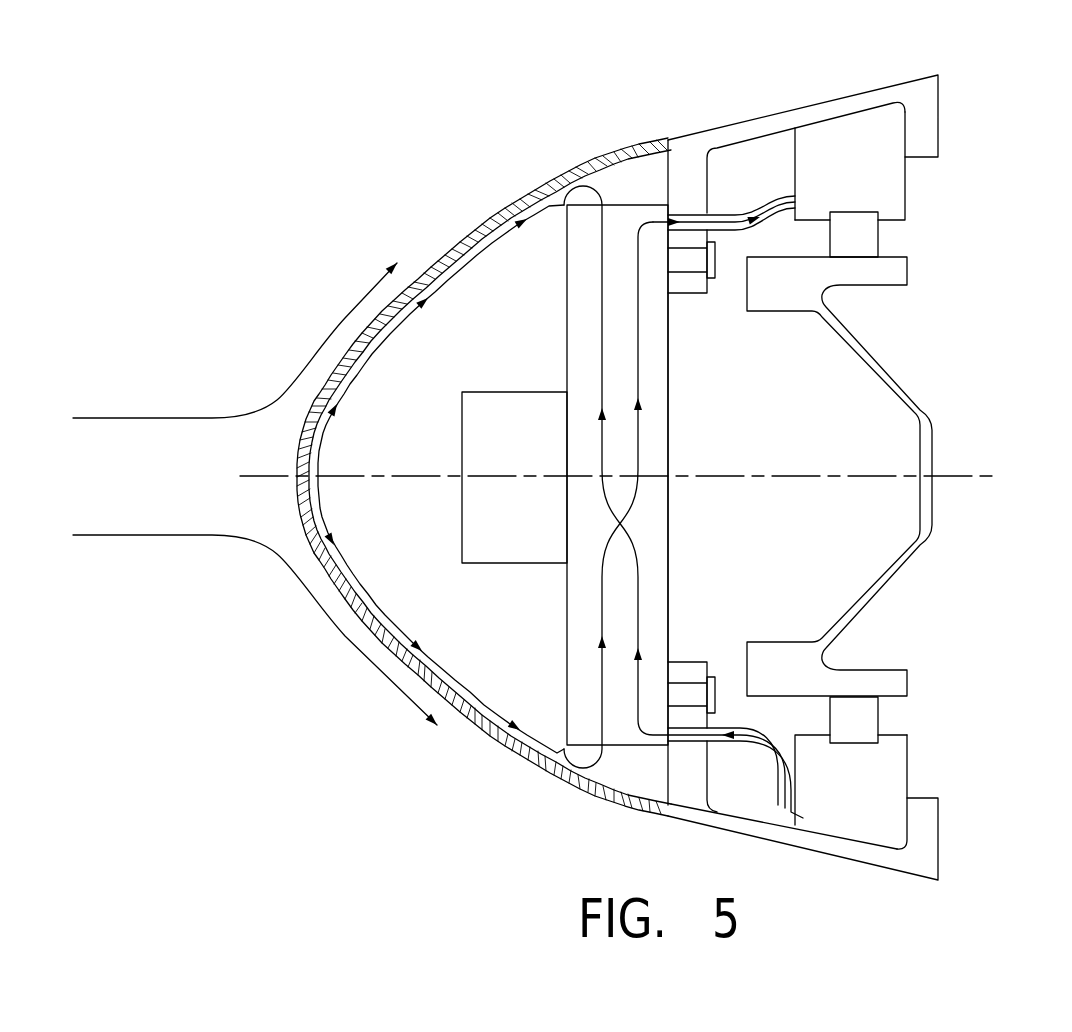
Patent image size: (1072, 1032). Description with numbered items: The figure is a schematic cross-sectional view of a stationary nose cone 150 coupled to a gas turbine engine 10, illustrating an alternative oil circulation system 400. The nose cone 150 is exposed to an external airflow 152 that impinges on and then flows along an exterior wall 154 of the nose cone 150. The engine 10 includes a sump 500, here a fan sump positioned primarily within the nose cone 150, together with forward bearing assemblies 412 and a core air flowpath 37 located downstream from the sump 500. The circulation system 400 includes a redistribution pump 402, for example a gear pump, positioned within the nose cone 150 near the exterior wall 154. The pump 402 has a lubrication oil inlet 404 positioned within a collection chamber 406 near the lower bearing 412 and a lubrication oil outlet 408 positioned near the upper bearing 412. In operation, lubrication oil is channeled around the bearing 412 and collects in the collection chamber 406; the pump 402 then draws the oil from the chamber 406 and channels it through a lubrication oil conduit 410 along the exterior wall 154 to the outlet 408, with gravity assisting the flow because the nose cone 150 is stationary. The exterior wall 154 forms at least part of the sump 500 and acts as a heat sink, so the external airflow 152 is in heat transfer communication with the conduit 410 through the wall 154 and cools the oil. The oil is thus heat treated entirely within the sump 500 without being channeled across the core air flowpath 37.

The gas turbine engine 10 is at (893, 72).
The core air flowpath 37 is at (1062, 254).
The nose cone 150 is at (300, 512).
The external airflow 152 is at (254, 405).
The exterior wall 154 is at (300, 440).
The oil circulation system 400 is at (540, 143).
The redistribution pump 402 is at (510, 543).
The lubrication oil inlet 404 is at (765, 752).
The collection chamber 406 is at (850, 843).
The lubrication oil outlet 408 is at (742, 168).
The lubrication oil conduit 410 is at (386, 344).
The forward bearing assemblies 412 is at (915, 215).
The sump 500 is at (520, 318).